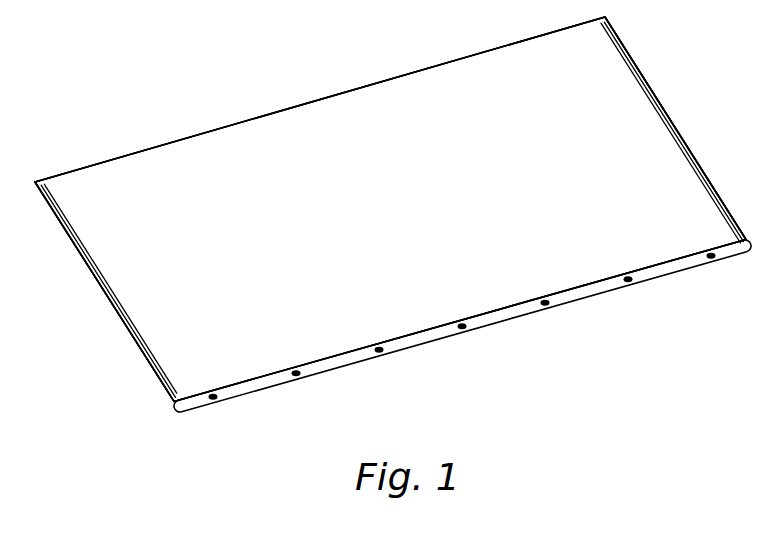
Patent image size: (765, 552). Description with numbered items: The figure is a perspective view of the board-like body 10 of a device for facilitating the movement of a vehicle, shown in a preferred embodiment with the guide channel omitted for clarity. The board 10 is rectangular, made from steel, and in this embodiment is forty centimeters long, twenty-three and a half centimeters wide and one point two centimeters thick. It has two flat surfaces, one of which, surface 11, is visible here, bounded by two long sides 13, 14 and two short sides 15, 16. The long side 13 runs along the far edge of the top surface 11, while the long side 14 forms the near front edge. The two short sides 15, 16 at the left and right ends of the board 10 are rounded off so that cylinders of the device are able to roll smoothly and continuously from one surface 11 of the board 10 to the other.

The board-like body 10 is at (264, 58).
The flat surface 11 is at (190, 170).
The long side 13 is at (412, 68).
The long side 14 is at (606, 285).
The short side 15 is at (100, 298).
The short side 16 is at (647, 73).